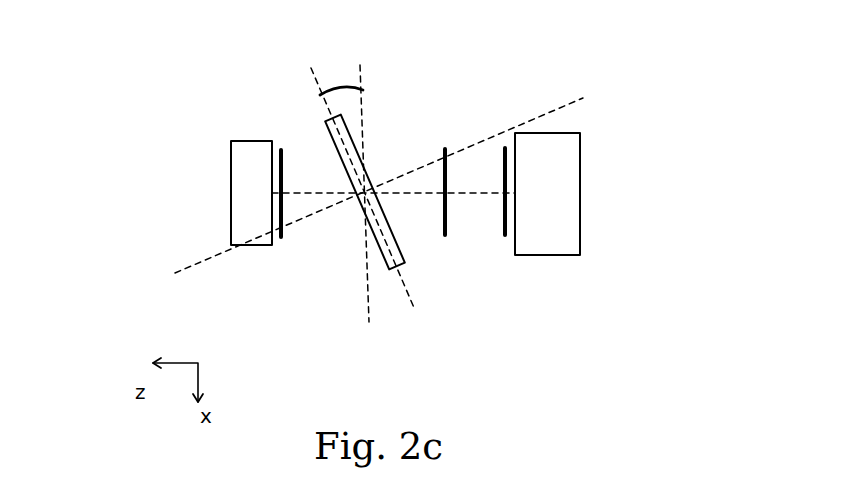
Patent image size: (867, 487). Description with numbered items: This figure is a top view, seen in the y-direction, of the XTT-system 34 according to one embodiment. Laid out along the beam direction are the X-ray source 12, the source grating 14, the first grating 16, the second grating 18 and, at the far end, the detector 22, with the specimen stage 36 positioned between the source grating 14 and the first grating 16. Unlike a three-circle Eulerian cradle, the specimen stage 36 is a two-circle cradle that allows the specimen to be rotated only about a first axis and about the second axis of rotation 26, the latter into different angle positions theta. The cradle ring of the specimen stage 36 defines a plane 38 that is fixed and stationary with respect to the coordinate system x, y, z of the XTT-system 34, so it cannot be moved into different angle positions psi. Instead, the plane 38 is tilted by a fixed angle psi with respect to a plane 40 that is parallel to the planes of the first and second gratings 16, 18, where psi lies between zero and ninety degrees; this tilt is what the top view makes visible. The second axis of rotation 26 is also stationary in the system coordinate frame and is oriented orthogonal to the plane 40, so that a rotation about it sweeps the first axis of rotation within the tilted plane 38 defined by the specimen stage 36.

The X-ray source 12 is at (250, 141).
The source grating 14 is at (280, 152).
The first grating 16 is at (447, 158).
The second grating 18 is at (503, 226).
The detector 22 is at (582, 192).
The second axis of rotation 26 is at (565, 101).
The XTT-system 34 is at (178, 68).
The specimen stage 36 is at (343, 259).
The plane 38 is at (404, 305).
The plane 40 is at (362, 78).